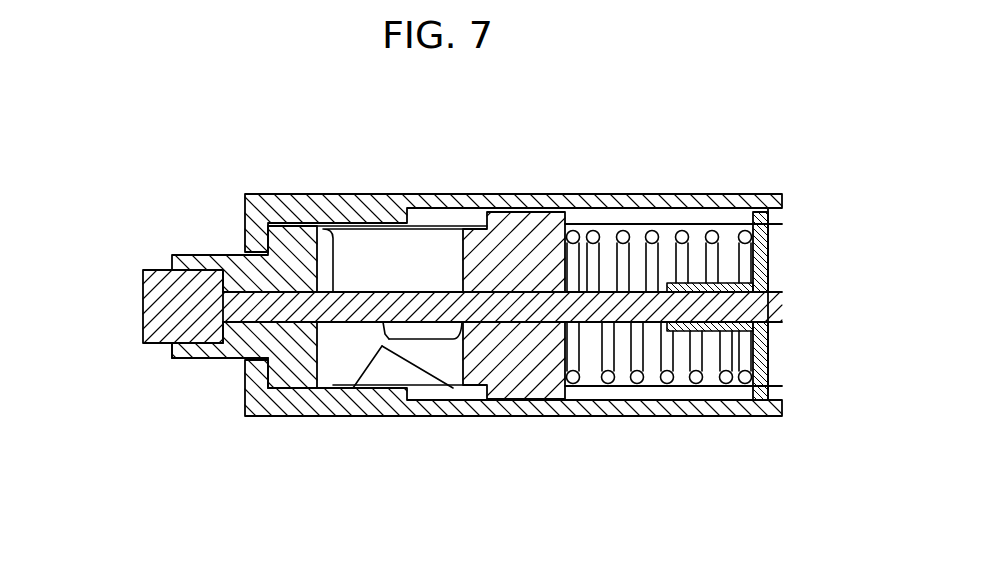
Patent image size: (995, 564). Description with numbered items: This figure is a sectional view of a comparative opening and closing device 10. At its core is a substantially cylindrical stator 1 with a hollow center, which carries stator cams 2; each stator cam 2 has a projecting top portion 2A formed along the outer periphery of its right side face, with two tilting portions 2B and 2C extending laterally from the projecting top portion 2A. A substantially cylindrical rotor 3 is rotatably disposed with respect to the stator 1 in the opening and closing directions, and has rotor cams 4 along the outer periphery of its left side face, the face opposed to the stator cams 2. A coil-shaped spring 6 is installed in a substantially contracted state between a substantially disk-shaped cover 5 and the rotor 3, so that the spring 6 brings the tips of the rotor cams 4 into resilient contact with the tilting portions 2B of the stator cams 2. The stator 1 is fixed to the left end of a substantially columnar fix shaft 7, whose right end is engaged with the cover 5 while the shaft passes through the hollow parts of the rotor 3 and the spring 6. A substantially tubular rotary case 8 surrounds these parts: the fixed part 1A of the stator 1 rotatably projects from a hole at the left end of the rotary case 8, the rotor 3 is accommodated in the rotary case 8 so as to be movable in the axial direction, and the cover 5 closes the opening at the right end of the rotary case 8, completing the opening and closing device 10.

The stator 1 is at (287, 370).
The fixed part 1A is at (187, 358).
The stator cam 2 is at (338, 367).
The projecting top portion 2A is at (384, 348).
The tilting portion 2B is at (365, 370).
The tilting portion 2C is at (356, 305).
The rotor 3 is at (533, 220).
The rotor cam 4 is at (438, 360).
The cover 5 is at (757, 396).
The spring 6 is at (665, 378).
The fix shaft 7 is at (160, 273).
The rotary case 8 is at (263, 197).
The opening and closing device 10 is at (707, 153).